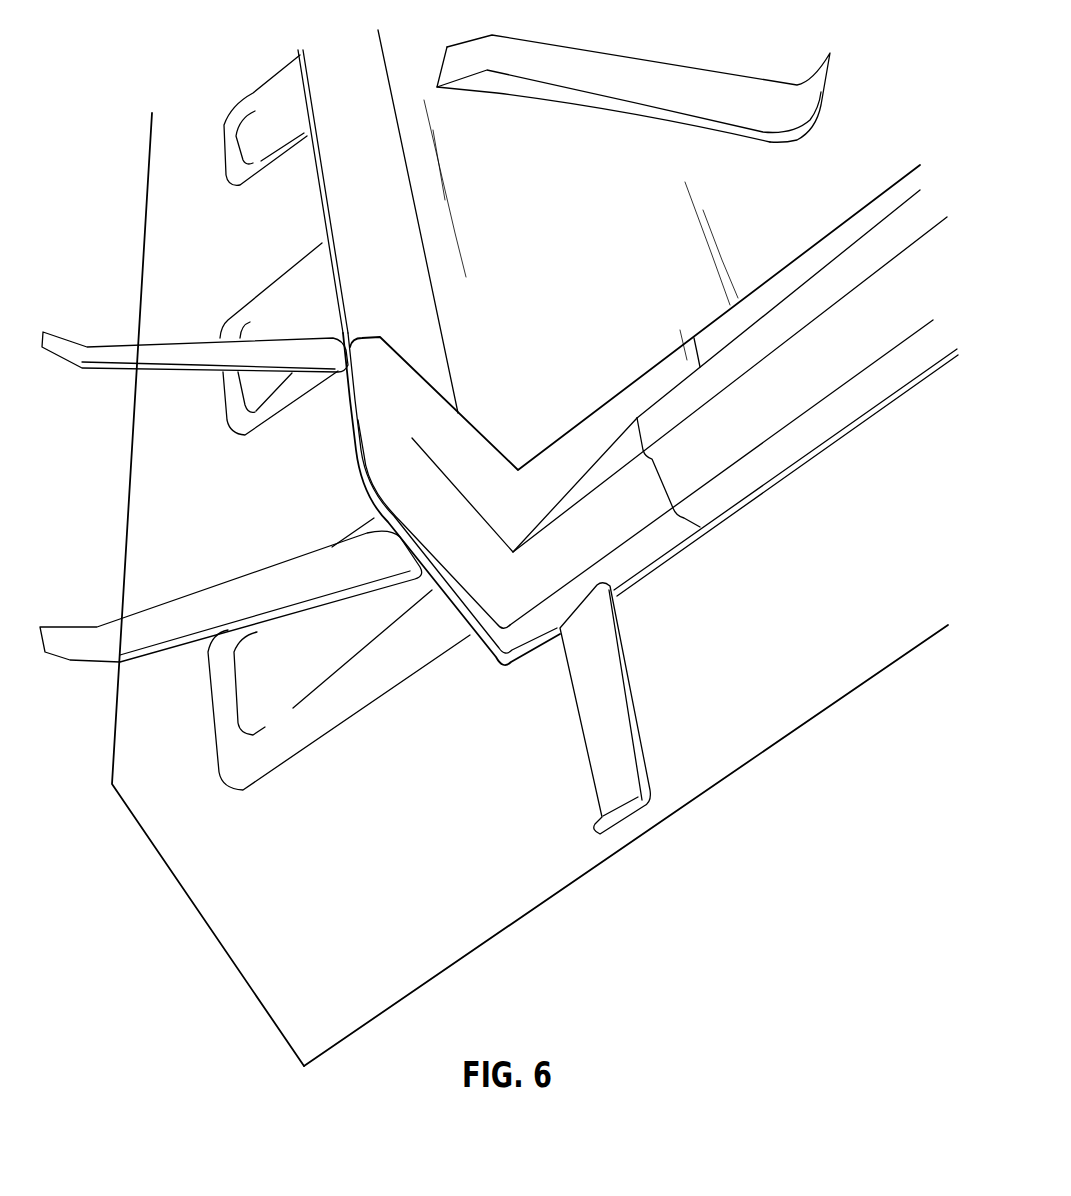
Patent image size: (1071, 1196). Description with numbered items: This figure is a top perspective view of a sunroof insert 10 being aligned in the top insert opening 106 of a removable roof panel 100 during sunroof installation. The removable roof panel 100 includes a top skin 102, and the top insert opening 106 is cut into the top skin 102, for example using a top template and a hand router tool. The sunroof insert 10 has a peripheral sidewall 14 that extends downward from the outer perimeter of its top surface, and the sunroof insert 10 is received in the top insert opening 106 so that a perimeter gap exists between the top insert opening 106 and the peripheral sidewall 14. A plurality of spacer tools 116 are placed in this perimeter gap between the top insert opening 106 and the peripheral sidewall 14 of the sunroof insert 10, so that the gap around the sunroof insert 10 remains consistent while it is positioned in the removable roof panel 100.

The sunroof insert 10 is at (333, 437).
The peripheral sidewall 14 is at (783, 420).
The removable roof panel 100 is at (108, 468).
The top skin 102 is at (742, 630).
The top insert opening 106 is at (740, 507).
The spacer tools 116 is at (635, 77).